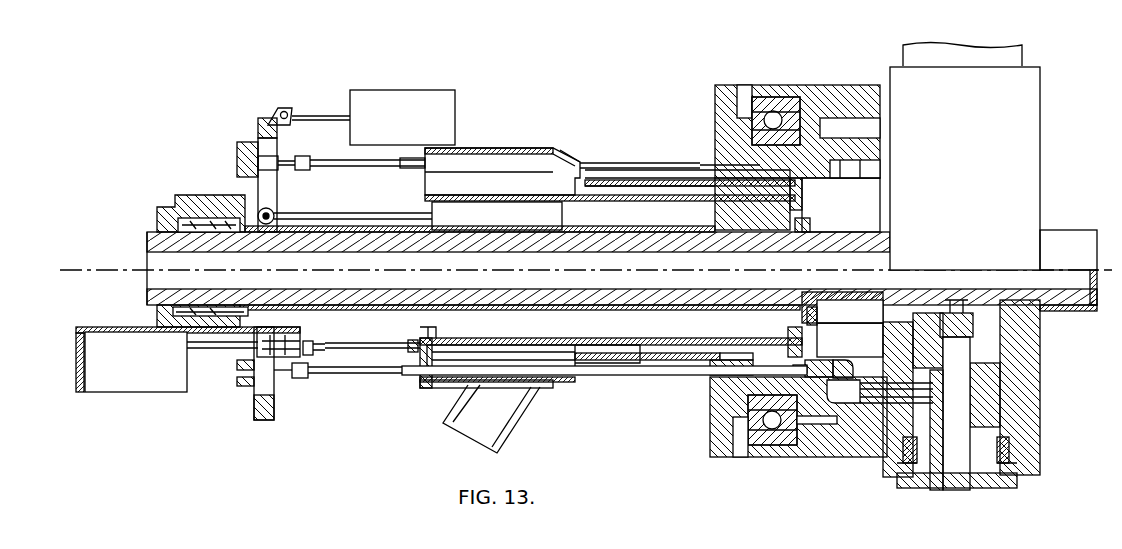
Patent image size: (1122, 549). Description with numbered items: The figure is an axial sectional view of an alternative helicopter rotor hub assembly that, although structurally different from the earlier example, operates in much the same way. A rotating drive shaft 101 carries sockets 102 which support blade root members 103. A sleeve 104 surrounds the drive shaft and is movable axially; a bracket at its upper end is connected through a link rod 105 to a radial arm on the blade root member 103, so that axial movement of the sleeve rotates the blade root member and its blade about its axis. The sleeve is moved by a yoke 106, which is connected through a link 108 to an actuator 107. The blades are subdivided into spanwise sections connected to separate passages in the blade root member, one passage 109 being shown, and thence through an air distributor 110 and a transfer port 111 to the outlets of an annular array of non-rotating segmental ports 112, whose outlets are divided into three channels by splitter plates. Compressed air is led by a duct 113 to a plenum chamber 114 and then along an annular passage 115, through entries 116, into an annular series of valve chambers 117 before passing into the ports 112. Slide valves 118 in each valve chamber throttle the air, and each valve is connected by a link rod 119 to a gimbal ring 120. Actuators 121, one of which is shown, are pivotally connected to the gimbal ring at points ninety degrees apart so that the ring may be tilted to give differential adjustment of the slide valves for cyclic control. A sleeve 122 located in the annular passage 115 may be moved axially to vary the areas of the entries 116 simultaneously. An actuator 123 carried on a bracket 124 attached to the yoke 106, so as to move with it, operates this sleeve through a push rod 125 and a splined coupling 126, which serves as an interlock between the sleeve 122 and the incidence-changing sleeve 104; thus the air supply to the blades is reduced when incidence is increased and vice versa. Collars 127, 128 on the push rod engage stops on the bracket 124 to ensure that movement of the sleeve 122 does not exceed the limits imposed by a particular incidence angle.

The rotating drive shaft 101 is at (150, 245).
The socket 102 is at (1030, 410).
The blade root member 103 is at (988, 480).
The sleeve 104 is at (453, 310).
The link rod 105 is at (876, 318).
The yoke 106 is at (172, 206).
The actuator 107 is at (514, 229).
The link 108 is at (350, 214).
The passage 109 is at (928, 470).
The air distributor 110 is at (912, 413).
The transfer port 111 is at (900, 395).
The port 112 is at (843, 402).
The duct 113 is at (497, 432).
The plenum chamber 114 is at (513, 355).
The annular passage 115 is at (670, 345).
The entry 116 is at (758, 360).
The valve chamber 117 is at (810, 368).
The slide valve 118 is at (842, 368).
The link rod 119 is at (356, 374).
The gimbal ring 120 is at (268, 410).
The actuator 121 is at (418, 129).
The sleeve 122 is at (600, 350).
The actuator 123 is at (147, 374).
The bracket 124 is at (122, 328).
The push rod 125 is at (362, 346).
The splined coupling 126 is at (240, 380).
The collar 127 is at (312, 342).
The collar 128 is at (285, 340).